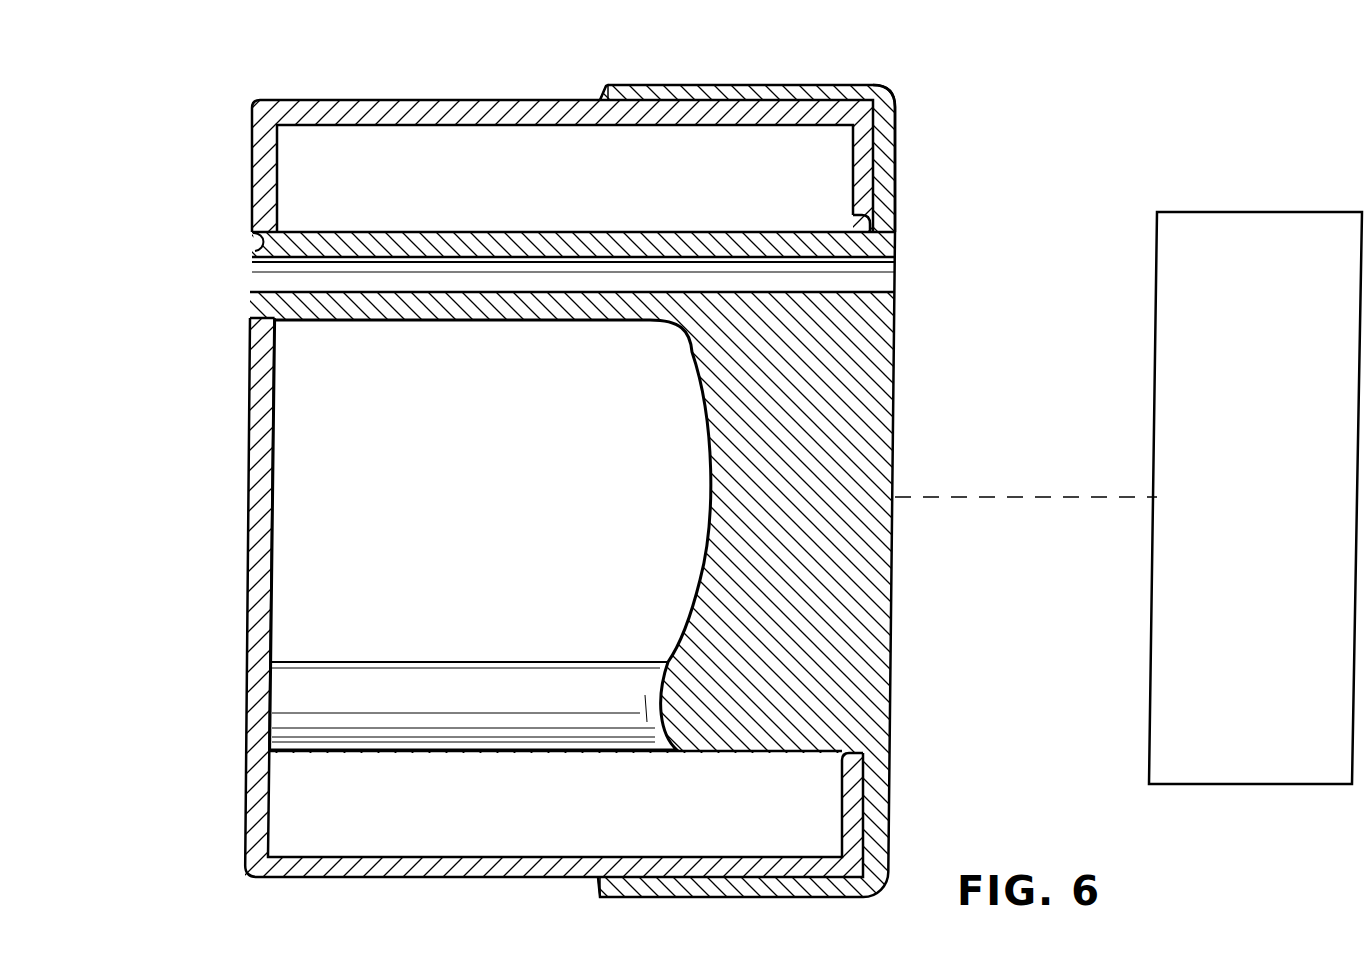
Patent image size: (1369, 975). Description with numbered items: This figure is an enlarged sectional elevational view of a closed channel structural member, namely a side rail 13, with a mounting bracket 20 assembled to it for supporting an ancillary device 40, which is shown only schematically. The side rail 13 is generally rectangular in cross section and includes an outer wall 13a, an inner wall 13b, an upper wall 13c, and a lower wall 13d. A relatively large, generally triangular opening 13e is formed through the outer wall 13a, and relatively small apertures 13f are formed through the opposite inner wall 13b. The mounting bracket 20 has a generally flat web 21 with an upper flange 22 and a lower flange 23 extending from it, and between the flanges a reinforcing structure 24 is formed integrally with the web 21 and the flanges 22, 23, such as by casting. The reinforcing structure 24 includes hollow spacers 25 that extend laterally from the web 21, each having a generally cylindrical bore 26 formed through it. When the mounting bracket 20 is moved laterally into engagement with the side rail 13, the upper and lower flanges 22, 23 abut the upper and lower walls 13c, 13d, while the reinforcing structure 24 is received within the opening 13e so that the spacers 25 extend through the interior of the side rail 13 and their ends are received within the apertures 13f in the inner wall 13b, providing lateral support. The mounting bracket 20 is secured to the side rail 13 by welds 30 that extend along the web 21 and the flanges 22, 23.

The side rail 13 is at (563, 484).
The outer wall 13a is at (870, 170).
The inner wall 13b is at (257, 175).
The upper wall 13c is at (423, 102).
The lower wall 13d is at (377, 870).
The opening 13e is at (865, 232).
The apertures 13f is at (257, 247).
The mounting bracket 20 is at (942, 107).
The web 21 is at (875, 817).
The upper flange 22 is at (770, 87).
The lower flange 23 is at (733, 892).
The reinforcing structure 24 is at (606, 428).
The spacers 25 is at (390, 310).
The bore 26 is at (563, 266).
The welds 30 is at (602, 92).
The ancillary device 40 is at (1128, 498).